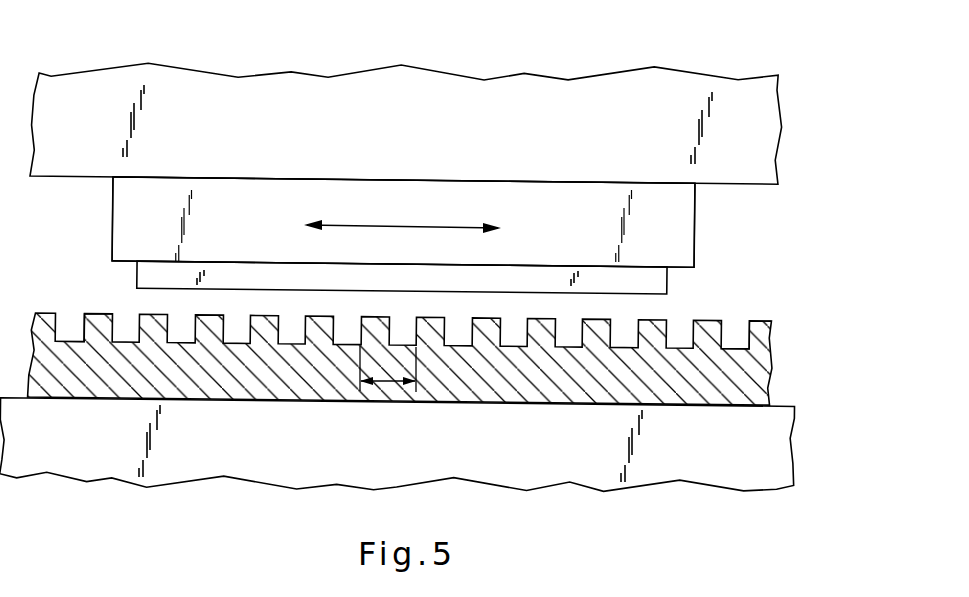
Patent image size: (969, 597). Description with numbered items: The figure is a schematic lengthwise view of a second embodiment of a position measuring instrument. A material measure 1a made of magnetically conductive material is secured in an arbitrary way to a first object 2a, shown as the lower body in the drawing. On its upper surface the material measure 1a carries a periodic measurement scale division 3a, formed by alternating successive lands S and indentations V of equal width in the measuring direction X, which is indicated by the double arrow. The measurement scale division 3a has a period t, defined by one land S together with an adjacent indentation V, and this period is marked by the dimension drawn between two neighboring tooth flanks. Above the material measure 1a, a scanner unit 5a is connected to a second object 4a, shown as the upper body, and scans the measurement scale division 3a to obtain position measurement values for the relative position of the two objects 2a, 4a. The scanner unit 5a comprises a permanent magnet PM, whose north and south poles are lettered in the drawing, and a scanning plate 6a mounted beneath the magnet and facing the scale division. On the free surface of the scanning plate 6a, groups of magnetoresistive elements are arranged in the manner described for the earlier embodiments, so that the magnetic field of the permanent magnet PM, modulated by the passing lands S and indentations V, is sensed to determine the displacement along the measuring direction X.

The material measure 1a is at (764, 380).
The first object 2a is at (761, 477).
The measurement scale division 3a is at (770, 337).
The second object 4a is at (678, 78).
The scanner unit 5a is at (691, 224).
The scanning plate 6a is at (667, 286).
The permanent magnet PM is at (119, 218).
The indentation V is at (72, 318).
The land S is at (101, 316).
The measuring direction X is at (402, 212).
The period t is at (388, 369).